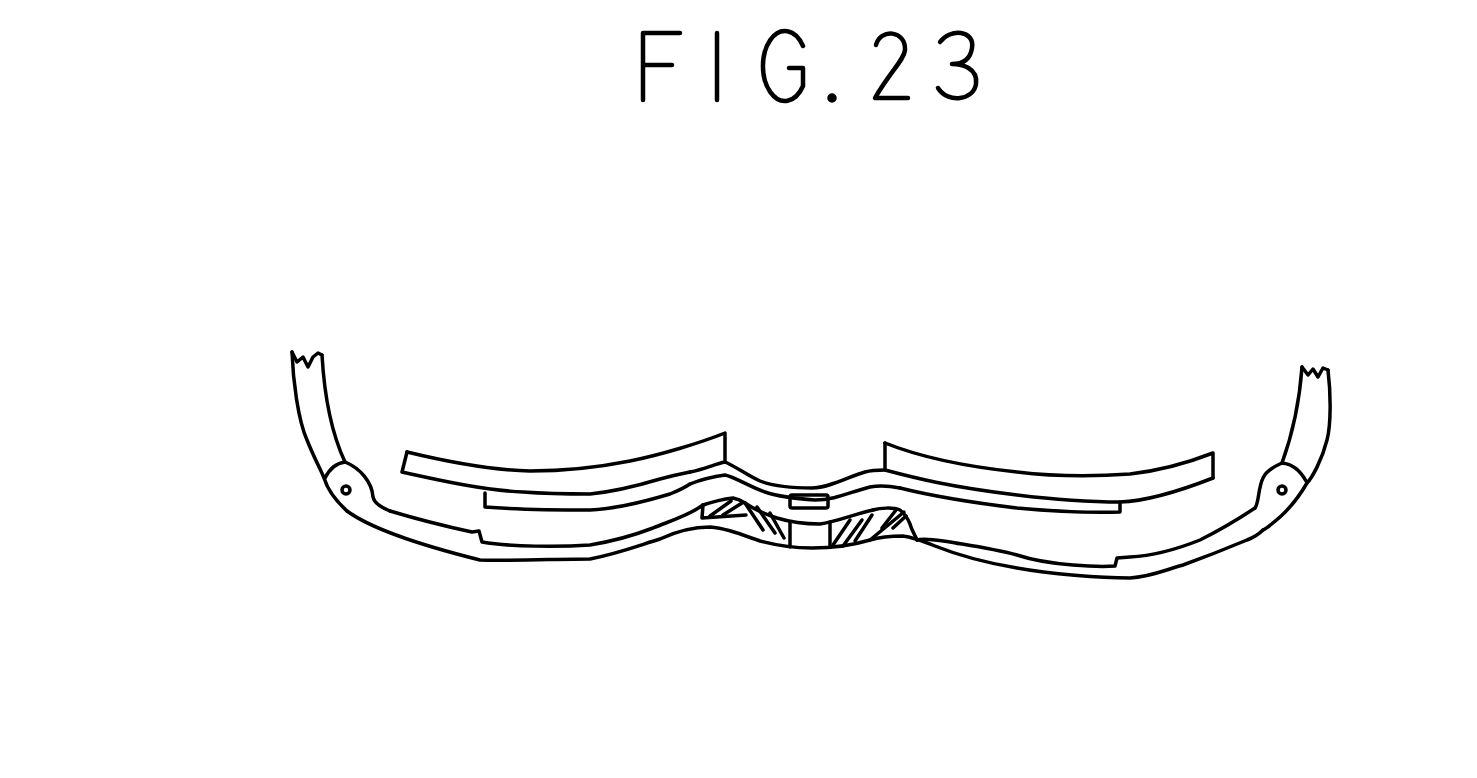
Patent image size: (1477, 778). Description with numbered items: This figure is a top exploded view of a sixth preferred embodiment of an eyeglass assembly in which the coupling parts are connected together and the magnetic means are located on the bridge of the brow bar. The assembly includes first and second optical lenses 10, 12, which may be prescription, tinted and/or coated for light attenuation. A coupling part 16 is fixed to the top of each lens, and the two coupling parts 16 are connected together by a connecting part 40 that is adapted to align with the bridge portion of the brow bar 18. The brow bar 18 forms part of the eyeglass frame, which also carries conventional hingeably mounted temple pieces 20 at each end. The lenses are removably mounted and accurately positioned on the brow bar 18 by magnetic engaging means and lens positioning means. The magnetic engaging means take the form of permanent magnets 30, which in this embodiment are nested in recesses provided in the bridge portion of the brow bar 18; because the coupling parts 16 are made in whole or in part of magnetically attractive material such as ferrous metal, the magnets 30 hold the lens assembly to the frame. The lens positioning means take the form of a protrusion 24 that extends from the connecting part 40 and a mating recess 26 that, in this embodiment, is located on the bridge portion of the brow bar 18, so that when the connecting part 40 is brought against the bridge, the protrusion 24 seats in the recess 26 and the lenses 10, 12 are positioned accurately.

The first optical lens 10 is at (1130, 480).
The second optical lens 12 is at (447, 458).
The coupling part 16 is at (613, 490).
The brow bar 18 is at (488, 561).
The temple pieces 20 is at (292, 360).
The protrusion 24 is at (806, 496).
The recess 26 is at (805, 550).
The permanent magnets 30 is at (738, 545).
The connecting part 40 is at (853, 471).